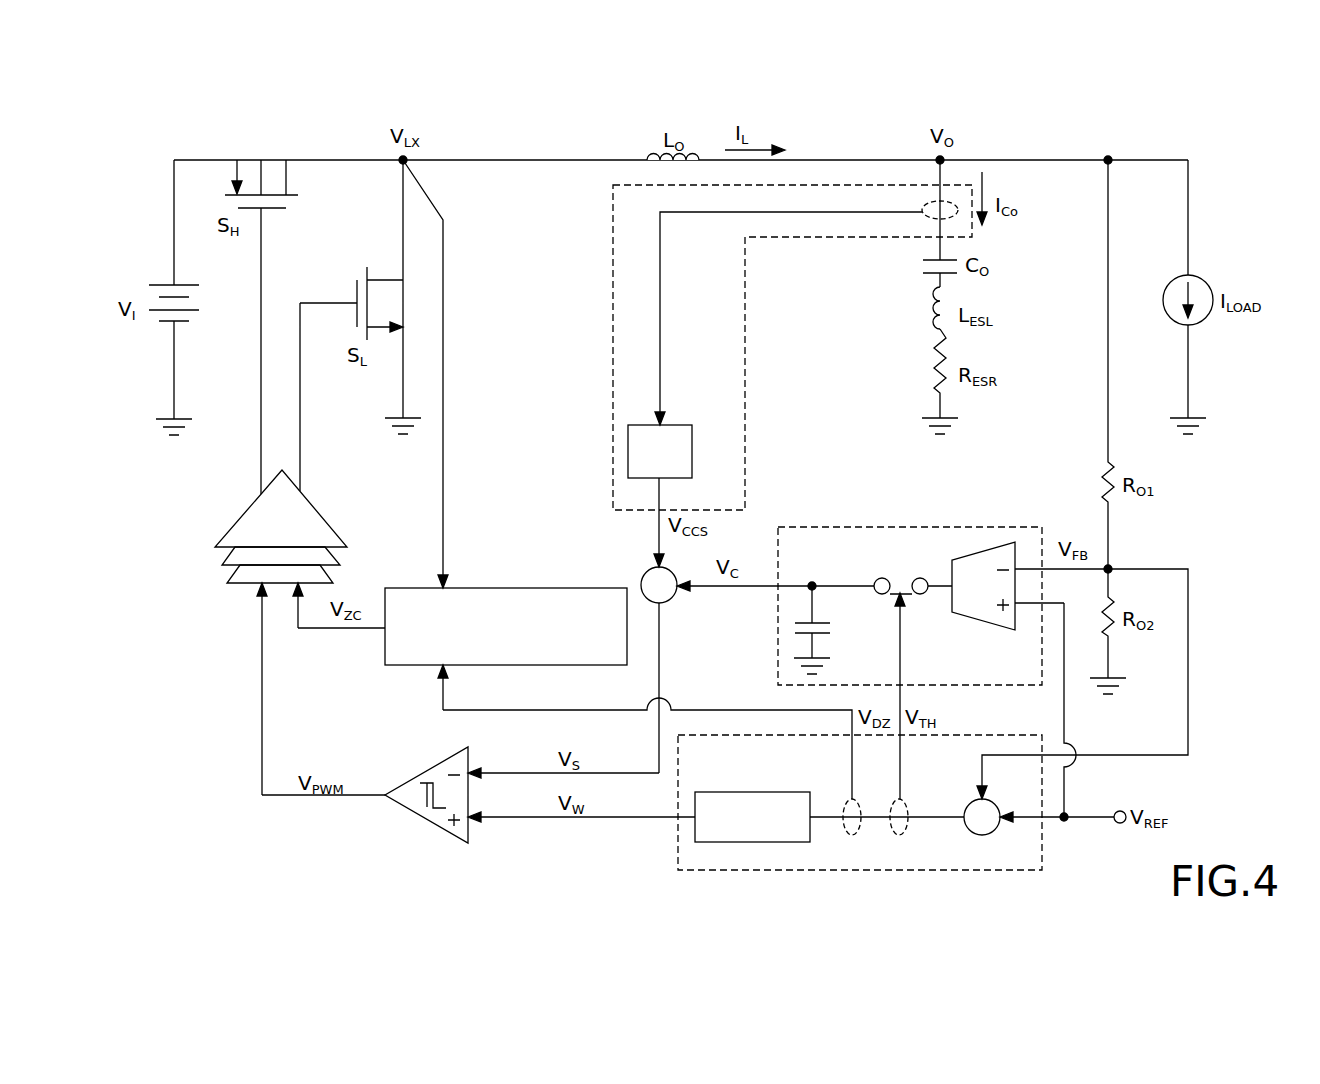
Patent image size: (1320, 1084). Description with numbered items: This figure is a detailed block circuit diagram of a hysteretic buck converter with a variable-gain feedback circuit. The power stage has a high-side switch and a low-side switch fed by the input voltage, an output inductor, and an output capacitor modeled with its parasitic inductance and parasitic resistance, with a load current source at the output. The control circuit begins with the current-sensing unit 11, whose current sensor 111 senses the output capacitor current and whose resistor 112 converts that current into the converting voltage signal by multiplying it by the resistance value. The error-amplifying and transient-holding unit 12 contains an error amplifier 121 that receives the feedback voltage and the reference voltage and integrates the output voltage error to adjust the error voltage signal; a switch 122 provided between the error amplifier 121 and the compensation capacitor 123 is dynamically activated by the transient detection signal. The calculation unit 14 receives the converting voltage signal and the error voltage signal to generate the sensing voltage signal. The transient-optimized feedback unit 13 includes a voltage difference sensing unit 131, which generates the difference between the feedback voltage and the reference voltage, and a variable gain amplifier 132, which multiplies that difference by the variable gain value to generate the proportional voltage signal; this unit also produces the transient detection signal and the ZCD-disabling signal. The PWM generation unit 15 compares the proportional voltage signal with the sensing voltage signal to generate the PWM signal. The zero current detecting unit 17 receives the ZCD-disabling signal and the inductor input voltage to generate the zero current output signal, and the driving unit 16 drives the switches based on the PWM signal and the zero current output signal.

The current-sensing unit 11 is at (745, 285).
The current sensor 111 is at (923, 220).
The resistor 112 is at (672, 425).
The error-amplifying and transient-holding unit 12 is at (807, 527).
The error amplifier 121 is at (988, 549).
The switch 122 is at (883, 578).
The compensation capacitor 123 is at (830, 625).
The transient-optimized feedback unit 13 is at (975, 735).
The voltage difference sensing unit 131 is at (982, 835).
The variable gain amplifier 132 is at (735, 792).
The calculation unit 14 is at (673, 598).
The PWM generation unit 15 is at (428, 822).
The driving unit 16 is at (246, 517).
The zero current detecting unit 17 is at (528, 588).